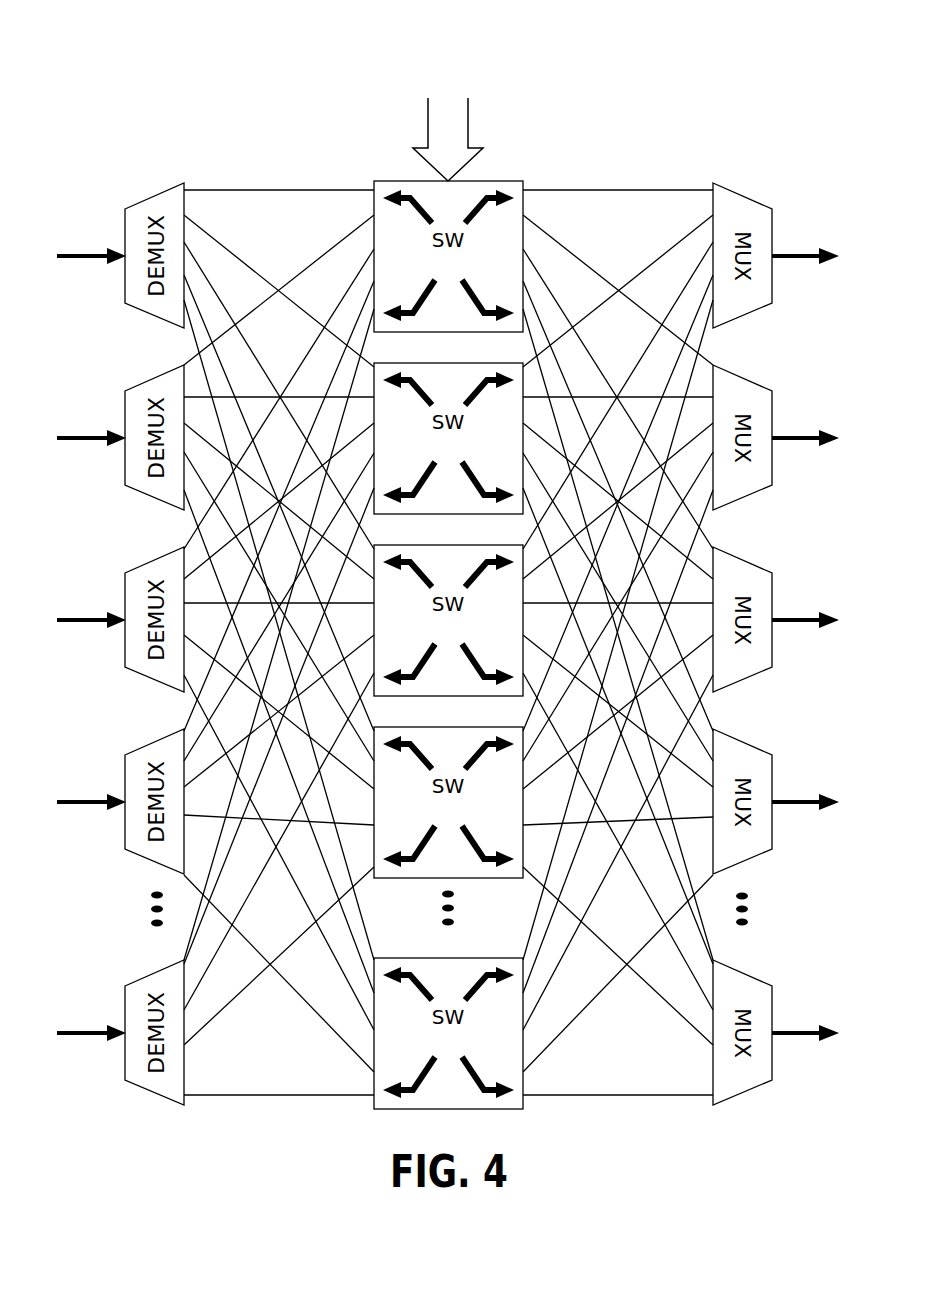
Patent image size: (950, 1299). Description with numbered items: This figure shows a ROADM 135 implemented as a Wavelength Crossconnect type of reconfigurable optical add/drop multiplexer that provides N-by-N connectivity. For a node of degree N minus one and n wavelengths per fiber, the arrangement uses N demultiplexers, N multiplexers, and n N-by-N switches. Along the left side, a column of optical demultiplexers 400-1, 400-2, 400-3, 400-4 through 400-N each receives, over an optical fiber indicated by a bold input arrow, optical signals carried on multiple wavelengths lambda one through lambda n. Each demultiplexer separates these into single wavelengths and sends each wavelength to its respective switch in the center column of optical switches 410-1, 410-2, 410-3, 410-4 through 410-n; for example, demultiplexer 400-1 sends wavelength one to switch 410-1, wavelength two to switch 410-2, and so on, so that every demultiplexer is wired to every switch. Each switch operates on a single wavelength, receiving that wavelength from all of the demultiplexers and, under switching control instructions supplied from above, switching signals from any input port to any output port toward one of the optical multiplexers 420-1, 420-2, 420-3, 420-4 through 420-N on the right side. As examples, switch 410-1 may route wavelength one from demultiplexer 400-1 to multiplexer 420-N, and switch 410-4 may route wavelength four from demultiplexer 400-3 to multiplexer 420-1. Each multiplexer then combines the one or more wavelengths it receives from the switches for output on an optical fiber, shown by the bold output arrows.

The ROADM 135 is at (88, 81).
The optical demultiplexer 400-1 is at (151, 194).
The optical demultiplexer 400-2 is at (151, 383).
The optical demultiplexer 400-3 is at (151, 564).
The optical demultiplexer 400-4 is at (151, 745).
The optical demultiplexer 400-N is at (151, 975).
The optical switch 410-1 is at (448, 256).
The optical switch 410-2 is at (448, 438).
The optical switch 410-3 is at (448, 620).
The optical switch 410-4 is at (448, 802).
The optical switch 410-n is at (448, 1033).
The optical multiplexer 420-1 is at (762, 204).
The optical multiplexer 420-2 is at (762, 388).
The optical multiplexer 420-3 is at (762, 570).
The optical multiplexer 420-4 is at (762, 749).
The optical multiplexer 420-N is at (762, 980).